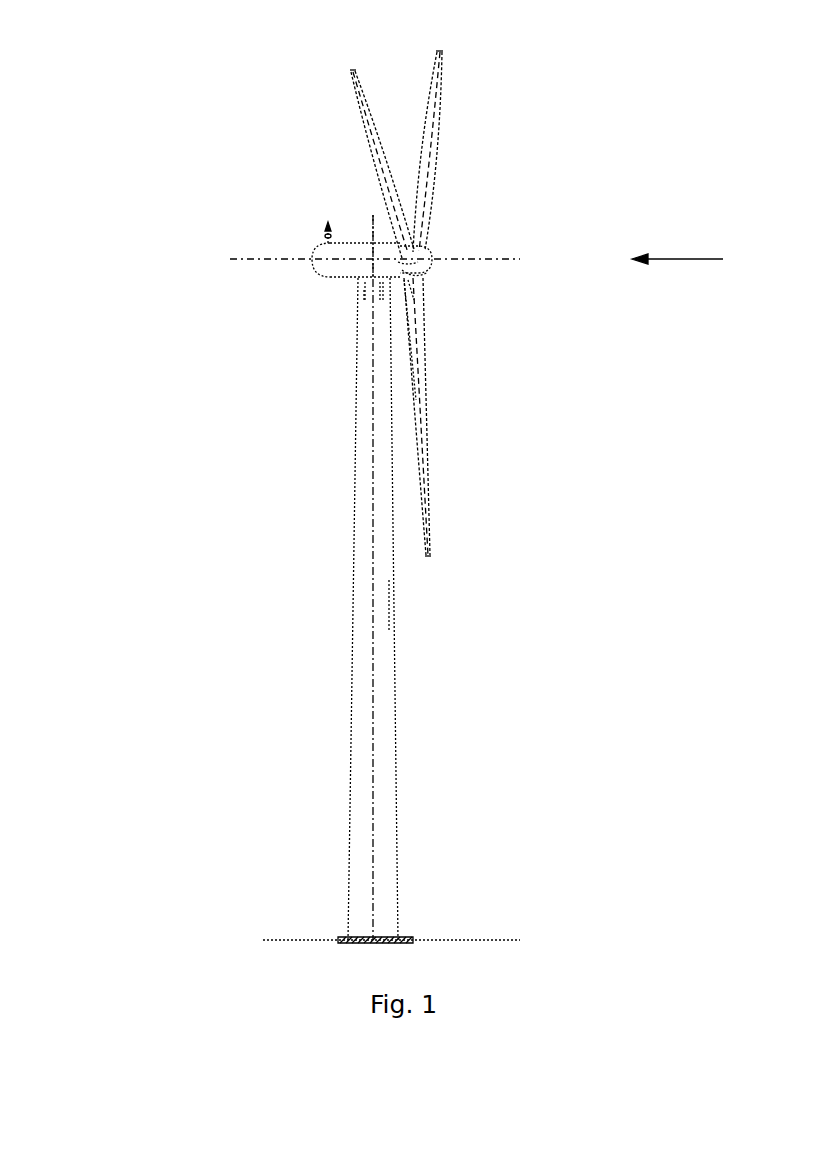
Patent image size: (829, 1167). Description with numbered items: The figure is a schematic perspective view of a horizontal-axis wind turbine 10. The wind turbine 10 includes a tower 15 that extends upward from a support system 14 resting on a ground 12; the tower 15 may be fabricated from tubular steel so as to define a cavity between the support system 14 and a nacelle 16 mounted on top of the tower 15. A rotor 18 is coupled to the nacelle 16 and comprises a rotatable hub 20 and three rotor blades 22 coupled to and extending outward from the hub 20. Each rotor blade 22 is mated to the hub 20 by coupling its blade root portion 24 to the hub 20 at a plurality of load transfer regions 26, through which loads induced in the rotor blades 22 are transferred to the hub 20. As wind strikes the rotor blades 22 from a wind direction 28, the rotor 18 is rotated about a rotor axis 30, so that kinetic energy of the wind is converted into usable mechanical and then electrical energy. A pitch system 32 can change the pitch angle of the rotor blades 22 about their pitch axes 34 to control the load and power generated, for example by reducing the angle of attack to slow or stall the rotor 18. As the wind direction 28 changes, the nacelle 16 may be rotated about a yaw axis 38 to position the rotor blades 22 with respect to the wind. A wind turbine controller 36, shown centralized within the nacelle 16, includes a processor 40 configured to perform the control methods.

The wind turbine 10 is at (160, 66).
The ground 12 is at (283, 938).
The support system 14 is at (340, 937).
The tower 15 is at (355, 585).
The nacelle 16 is at (336, 280).
The rotor 18 is at (450, 172).
The rotatable hub 20 is at (433, 257).
The rotor blade 22 is at (366, 137).
The blade root portion 24 is at (422, 350).
The load transfer region 26 is at (422, 274).
The wind direction 28 is at (702, 258).
The rotor axis 30 is at (500, 262).
The pitch system 32 is at (412, 305).
The pitch axis 34 is at (348, 71).
The wind turbine controller 36 is at (372, 292).
The yaw axis 38 is at (384, 648).
The processor 40 is at (378, 222).